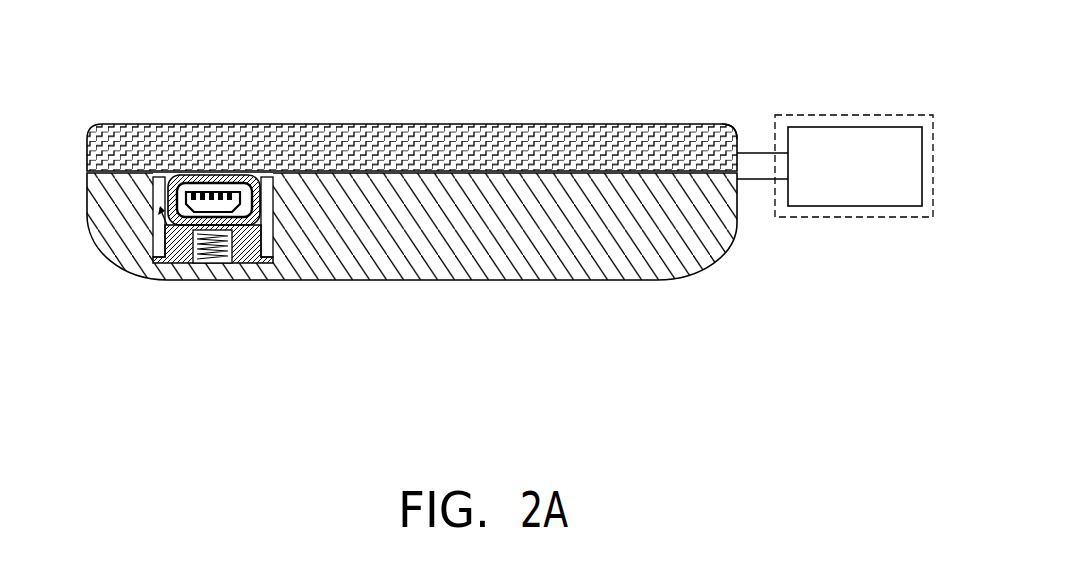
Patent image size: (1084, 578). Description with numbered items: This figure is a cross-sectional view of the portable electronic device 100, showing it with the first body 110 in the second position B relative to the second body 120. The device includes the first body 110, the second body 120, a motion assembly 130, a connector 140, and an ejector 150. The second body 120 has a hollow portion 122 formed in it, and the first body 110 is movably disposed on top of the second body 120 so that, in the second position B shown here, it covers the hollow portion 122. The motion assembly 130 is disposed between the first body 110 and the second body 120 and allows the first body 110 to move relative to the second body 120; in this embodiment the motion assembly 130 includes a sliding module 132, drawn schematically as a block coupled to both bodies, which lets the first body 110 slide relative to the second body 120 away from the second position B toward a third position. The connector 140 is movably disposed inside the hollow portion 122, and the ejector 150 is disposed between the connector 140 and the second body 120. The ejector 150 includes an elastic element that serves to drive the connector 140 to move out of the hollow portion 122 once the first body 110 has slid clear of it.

The portable electronic device 100 is at (510, 213).
The first body 110 is at (545, 138).
The second body 120 is at (685, 258).
The hollow portion 122 is at (172, 263).
The motion assembly 130 is at (835, 163).
The sliding module 132 is at (848, 126).
The connector 140 is at (290, 173).
The ejector 150 is at (223, 263).
The second position B is at (729, 128).